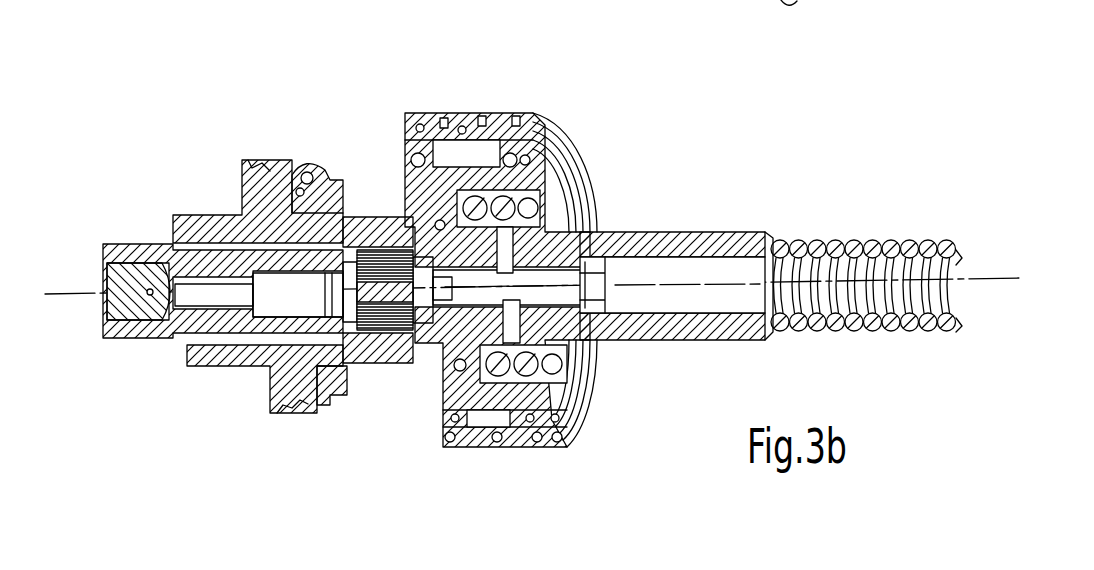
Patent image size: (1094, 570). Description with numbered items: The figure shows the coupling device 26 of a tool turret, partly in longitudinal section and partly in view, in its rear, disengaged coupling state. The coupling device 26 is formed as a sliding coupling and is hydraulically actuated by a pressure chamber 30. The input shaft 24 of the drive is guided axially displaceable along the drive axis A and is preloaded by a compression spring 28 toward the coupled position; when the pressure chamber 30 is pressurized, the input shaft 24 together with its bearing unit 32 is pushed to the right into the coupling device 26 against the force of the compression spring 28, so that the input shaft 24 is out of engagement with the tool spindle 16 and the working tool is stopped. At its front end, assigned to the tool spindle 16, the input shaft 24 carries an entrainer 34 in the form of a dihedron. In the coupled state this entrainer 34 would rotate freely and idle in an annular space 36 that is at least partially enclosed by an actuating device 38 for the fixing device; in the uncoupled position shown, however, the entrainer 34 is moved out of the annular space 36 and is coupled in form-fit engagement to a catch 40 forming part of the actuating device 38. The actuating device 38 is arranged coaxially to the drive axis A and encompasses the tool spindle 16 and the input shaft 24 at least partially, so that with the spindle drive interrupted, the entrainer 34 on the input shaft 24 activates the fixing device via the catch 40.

The tool spindle 16 is at (167, 253).
The input shaft 24 is at (690, 243).
The coupling device 26 is at (568, 229).
The compression spring 28 is at (897, 240).
The pressure chamber 30 is at (478, 162).
The bearing unit 32 is at (430, 170).
The entrainer 34 is at (359, 220).
The annular space 36 is at (298, 190).
The actuating device 38 is at (253, 168).
The catch 40 is at (353, 225).
The drive axis A is at (984, 279).